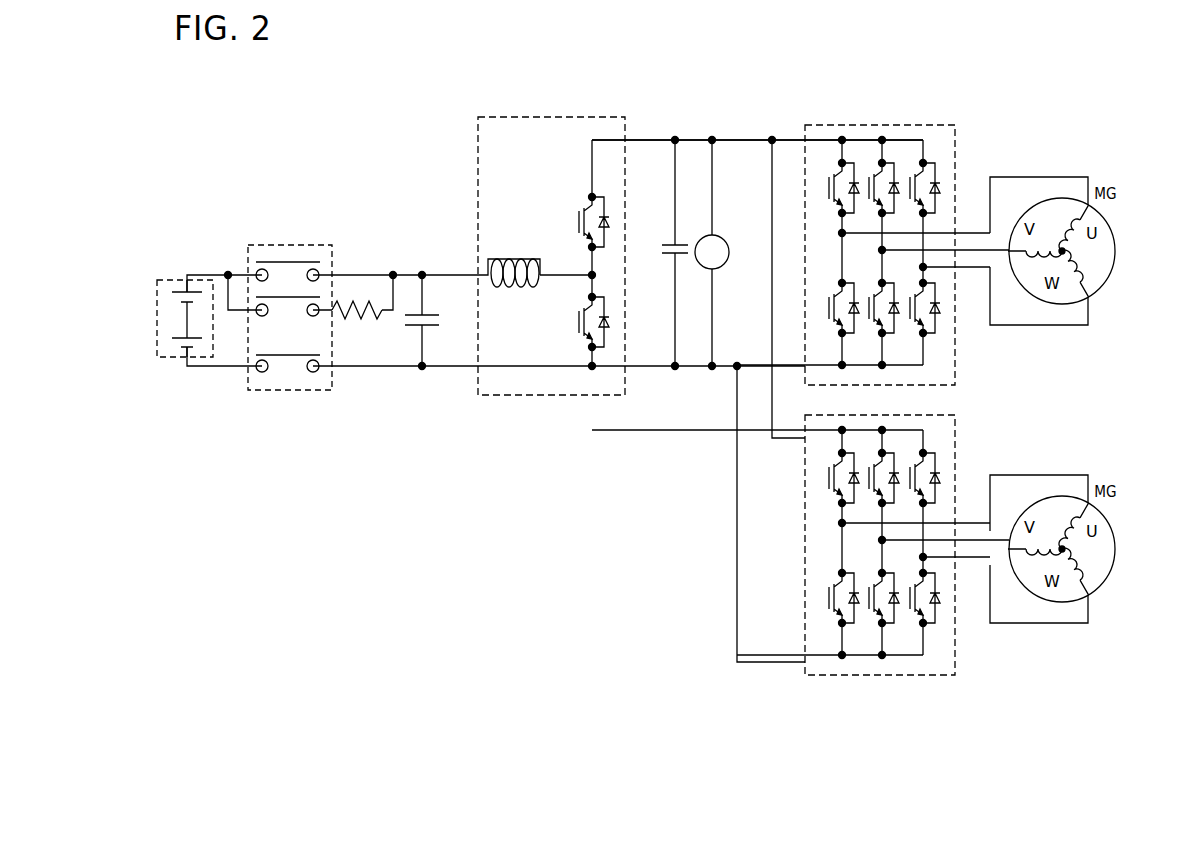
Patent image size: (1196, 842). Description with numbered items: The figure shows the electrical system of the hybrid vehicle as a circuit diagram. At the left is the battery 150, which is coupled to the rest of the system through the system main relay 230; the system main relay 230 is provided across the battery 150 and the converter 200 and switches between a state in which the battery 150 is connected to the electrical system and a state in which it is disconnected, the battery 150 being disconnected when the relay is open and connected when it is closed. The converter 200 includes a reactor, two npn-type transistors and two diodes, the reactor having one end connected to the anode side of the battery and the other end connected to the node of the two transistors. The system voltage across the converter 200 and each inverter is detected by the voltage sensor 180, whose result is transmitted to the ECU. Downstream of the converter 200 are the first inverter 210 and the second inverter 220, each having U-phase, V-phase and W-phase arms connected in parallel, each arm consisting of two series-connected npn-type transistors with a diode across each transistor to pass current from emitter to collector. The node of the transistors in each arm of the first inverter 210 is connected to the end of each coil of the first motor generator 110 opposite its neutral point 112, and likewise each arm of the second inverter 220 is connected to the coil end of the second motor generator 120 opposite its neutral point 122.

The first motor generator 110 is at (1100, 283).
The neutral point 112 is at (1062, 251).
The second motor generator 120 is at (1100, 581).
The neutral point 122 is at (1062, 549).
The battery 150 is at (172, 280).
The voltage sensor 180 is at (719, 268).
The converter 200 is at (607, 115).
The first inverter 210 is at (956, 340).
The second inverter 220 is at (956, 638).
The system main relay 230 is at (283, 245).